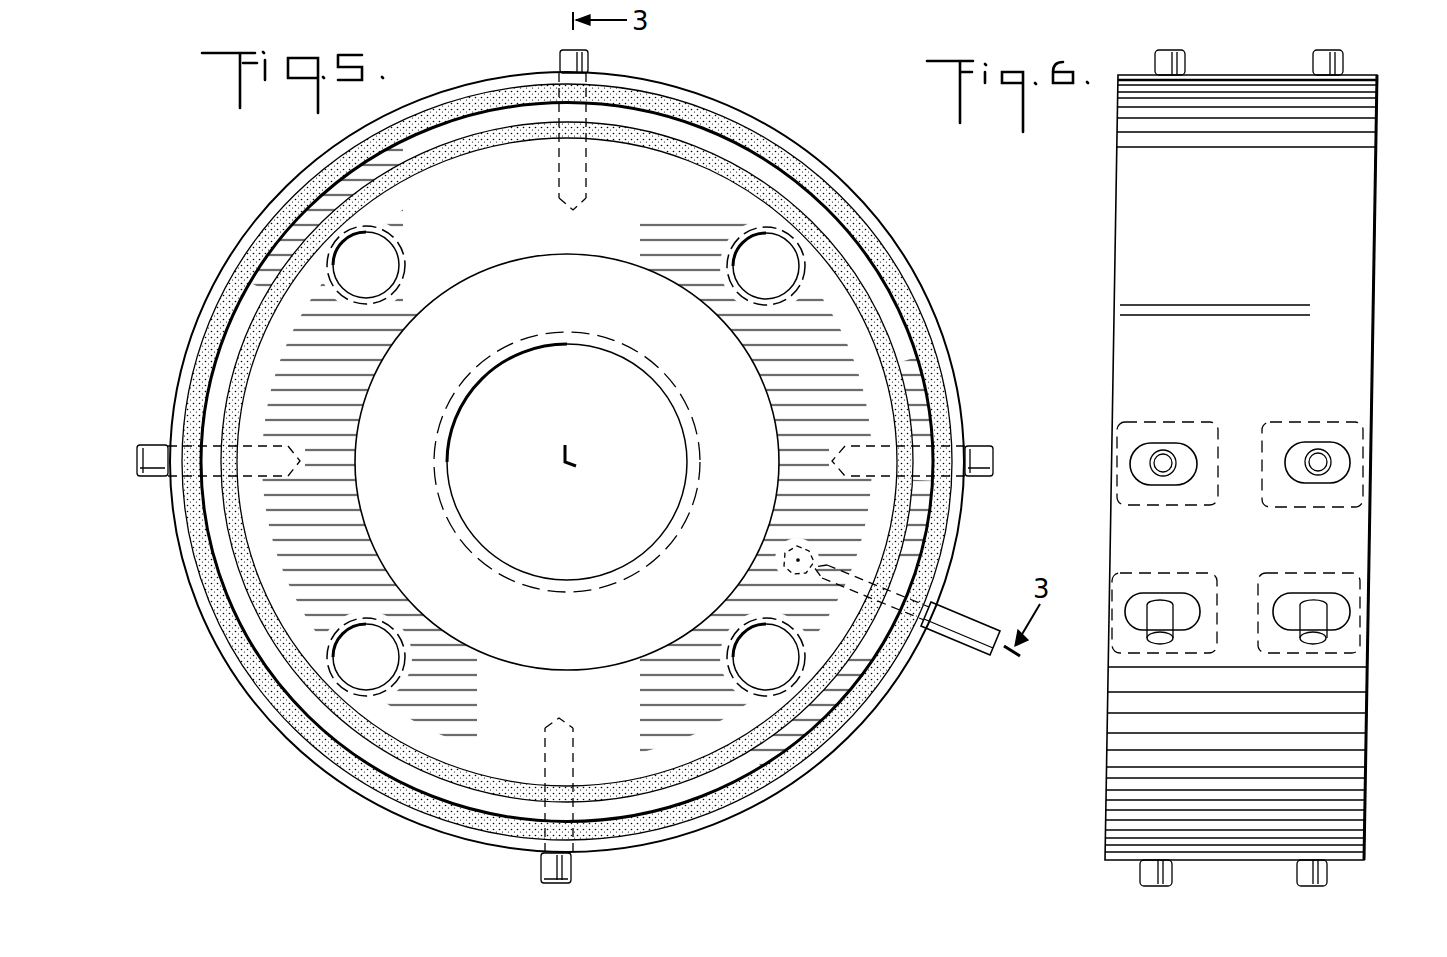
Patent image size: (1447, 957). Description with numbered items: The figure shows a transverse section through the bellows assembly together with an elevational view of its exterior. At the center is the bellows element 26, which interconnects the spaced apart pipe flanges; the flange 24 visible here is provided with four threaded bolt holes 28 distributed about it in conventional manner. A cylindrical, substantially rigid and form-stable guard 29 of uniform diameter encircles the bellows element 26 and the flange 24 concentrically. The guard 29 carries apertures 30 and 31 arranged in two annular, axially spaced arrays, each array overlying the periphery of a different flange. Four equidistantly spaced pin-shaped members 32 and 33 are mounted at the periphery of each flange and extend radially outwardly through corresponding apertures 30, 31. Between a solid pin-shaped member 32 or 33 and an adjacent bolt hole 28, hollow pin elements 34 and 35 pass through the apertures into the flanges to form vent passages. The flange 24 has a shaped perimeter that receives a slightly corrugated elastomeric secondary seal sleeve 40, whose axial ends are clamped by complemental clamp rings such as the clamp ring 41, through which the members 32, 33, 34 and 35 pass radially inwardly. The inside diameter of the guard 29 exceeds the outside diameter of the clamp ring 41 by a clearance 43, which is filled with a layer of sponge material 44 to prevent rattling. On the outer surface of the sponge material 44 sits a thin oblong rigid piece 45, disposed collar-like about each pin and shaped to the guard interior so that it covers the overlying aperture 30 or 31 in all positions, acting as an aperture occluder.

In FIG. 5, the pipe flange 24 is at (853, 333).
In FIG. 5, the bellows element 26 is at (566, 346).
In FIG. 5, the threaded bolt holes 28 is at (392, 262).
In FIG. 5, the guard 29 is at (820, 745).
In FIG. 6, the guard 29 is at (1355, 193).
In FIG. 6, the apertures 30 is at (1138, 470).
In FIG. 6, the apertures 31 is at (1348, 472).
In FIG. 5, the pin-shaped member 32 is at (592, 56).
In FIG. 6, the pin-shaped member 32 is at (1163, 52).
In FIG. 6, the pin-shaped member 33 is at (1343, 56).
In FIG. 5, the hollow pin element 34 is at (970, 623).
In FIG. 6, the hollow pin element 34 is at (1150, 638).
In FIG. 6, the hollow pin element 35 is at (1325, 638).
In FIG. 5, the secondary seal sleeve 40 is at (790, 212).
In FIG. 5, the clamp ring 41 is at (745, 162).
In FIG. 5, the clearance 43 is at (463, 105).
In FIG. 5, the sponge material 44 is at (525, 98).
In FIG. 6, the aperture occluder piece 45 is at (1158, 422).